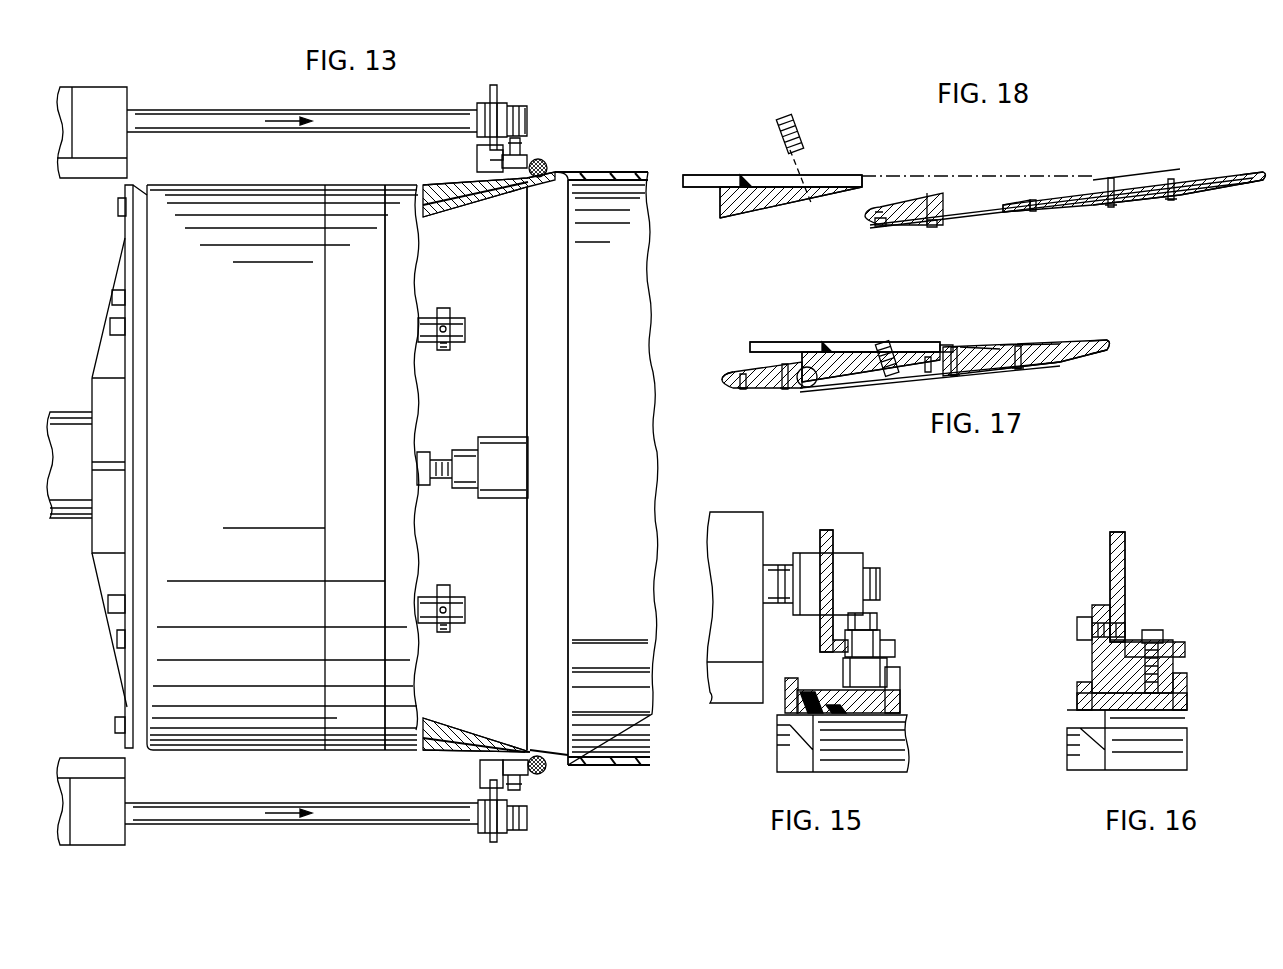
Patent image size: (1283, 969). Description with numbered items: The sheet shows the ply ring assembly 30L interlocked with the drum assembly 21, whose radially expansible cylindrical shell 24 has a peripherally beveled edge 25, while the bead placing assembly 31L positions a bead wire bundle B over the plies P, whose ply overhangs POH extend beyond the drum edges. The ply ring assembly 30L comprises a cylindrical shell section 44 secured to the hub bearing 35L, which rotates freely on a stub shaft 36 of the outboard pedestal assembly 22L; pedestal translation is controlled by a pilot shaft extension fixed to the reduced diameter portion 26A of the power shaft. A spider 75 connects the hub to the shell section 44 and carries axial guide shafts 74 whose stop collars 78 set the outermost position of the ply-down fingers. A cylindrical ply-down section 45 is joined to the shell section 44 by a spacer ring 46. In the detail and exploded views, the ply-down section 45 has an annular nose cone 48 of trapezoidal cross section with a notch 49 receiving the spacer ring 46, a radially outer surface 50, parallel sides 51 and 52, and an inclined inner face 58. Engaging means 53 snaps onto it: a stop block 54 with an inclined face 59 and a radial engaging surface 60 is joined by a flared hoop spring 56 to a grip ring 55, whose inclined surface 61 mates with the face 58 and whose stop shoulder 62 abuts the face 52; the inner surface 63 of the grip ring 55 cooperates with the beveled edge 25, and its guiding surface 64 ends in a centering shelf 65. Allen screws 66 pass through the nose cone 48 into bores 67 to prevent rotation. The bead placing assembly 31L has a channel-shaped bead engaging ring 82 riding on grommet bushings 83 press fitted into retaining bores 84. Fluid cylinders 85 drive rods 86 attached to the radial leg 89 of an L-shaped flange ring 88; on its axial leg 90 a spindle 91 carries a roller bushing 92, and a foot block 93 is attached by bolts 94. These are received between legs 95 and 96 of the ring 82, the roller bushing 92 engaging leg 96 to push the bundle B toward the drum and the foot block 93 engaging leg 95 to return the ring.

In FIG. 13, the fluid cylinders 85 is at (100, 105).
In FIG. 15, the fluid cylinders 85 is at (725, 576).
In FIG. 13, the reciprocating rods 86 is at (352, 118).
In FIG. 15, the reciprocating rods 86 is at (872, 580).
In FIG. 13, the annular flange ring 88 is at (494, 88).
In FIG. 15, the annular flange ring 88 is at (836, 548).
In FIG. 16, the annular flange ring 88 is at (1128, 556).
In FIG. 13, the bead placing assembly 31L is at (508, 112).
In FIG. 15, the bead placing assembly 31L is at (782, 525).
In FIG. 13, the roller bushing 92 is at (518, 160).
In FIG. 15, the roller bushing 92 is at (843, 668).
In FIG. 13, the foot block 93 is at (478, 158).
In FIG. 16, the foot block 93 is at (1095, 662).
In FIG. 13, the bead engaging ring 82 is at (472, 172).
In FIG. 15, the bead engaging ring 82 is at (903, 700).
In FIG. 16, the bead engaging ring 82 is at (1190, 702).
In FIG. 13, the ply-down section 45 is at (420, 184).
In FIG. 18, the ply-down section 45 is at (880, 163).
In FIG. 17, the ply-down section 45 is at (762, 341).
In FIG. 13, the cylindrical shell section 44 is at (228, 185).
In FIG. 15, the cylindrical shell section 44 is at (900, 748).
In FIG. 16, the cylindrical shell section 44 is at (1175, 756).
In FIG. 13, the ply ring assembly 30L is at (270, 184).
In FIG. 13, the spacer ring 46 is at (352, 186).
In FIG. 18, the spacer ring 46 is at (716, 176).
In FIG. 17, the spacer ring 46 is at (790, 342).
In FIG. 13, the ply overhangs POH is at (458, 208).
In FIG. 13, the bead wire bundle B is at (549, 165).
In FIG. 13, the plies P is at (603, 171).
In FIG. 13, the beveled edge 25 is at (540, 242).
In FIG. 13, the drum assembly 21 is at (522, 277).
In FIG. 13, the cylindrical shell 24 is at (645, 310).
In FIG. 13, the axial guide shafts 74 is at (462, 333).
In FIG. 13, the stop collars 78 is at (444, 350).
In FIG. 13, the reduced diameter shaft portion 26A is at (490, 440).
In FIG. 13, the spider 75 is at (105, 345).
In FIG. 13, the stub shaft 36 is at (62, 420).
In FIG. 13, the hub bearing 35L is at (112, 416).
In FIG. 13, the outboard pedestal assembly 22L is at (560, 812).
In FIG. 18, the Allen screws 66 is at (797, 124).
In FIG. 17, the Allen screws 66 is at (884, 342).
In FIG. 18, the radially outer surface 50 is at (818, 176).
In FIG. 18, the annular nose cone 48 is at (834, 182).
In FIG. 17, the annular nose cone 48 is at (846, 345).
In FIG. 18, the recess or notch 49 is at (744, 177).
In FIG. 17, the recess or notch 49 is at (816, 342).
In FIG. 18, the parallel side 51 is at (716, 210).
In FIG. 17, the parallel side 51 is at (800, 385).
In FIG. 18, the radially inward annular face 58 is at (775, 212).
In FIG. 17, the radially inward annular face 58 is at (924, 375).
In FIG. 18, the second parallel face 52 is at (863, 190).
In FIG. 17, the second parallel face 52 is at (995, 348).
In FIG. 18, the radially outwardly inclined face 59 is at (895, 210).
In FIG. 17, the radially outwardly inclined face 59 is at (745, 366).
In FIG. 18, the radial engaging surface 60 is at (940, 210).
In FIG. 17, the radial engaging surface 60 is at (814, 384).
In FIG. 18, the radially inclined surface 61 is at (1012, 204).
In FIG. 17, the radially inclined surface 61 is at (938, 345).
In FIG. 18, the stop block 54 is at (905, 225).
In FIG. 17, the stop block 54 is at (764, 384).
In FIG. 18, the flared hoop spring 56 is at (985, 230).
In FIG. 17, the flared hoop spring 56 is at (862, 385).
In FIG. 18, the bores 67 is at (1034, 213).
In FIG. 17, the bores 67 is at (925, 375).
In FIG. 18, the engaging means 53 is at (1080, 168).
In FIG. 17, the engaging means 53 is at (1112, 343).
In FIG. 18, the radial stop shoulder 62 is at (1110, 178).
In FIG. 17, the radial stop shoulder 62 is at (950, 346).
In FIG. 18, the grip ring 55 is at (1142, 180).
In FIG. 17, the grip ring 55 is at (1018, 346).
In FIG. 18, the radially outer-inclined guiding surface 64 is at (1200, 178).
In FIG. 17, the radially outer-inclined guiding surface 64 is at (1052, 345).
In FIG. 18, the annular centering shelf 65 is at (1255, 172).
In FIG. 17, the annular centering shelf 65 is at (1098, 342).
In FIG. 18, the radially inner surface 63 is at (1210, 193).
In FIG. 17, the radially inner surface 63 is at (1058, 360).
In FIG. 15, the radially oriented leg 89 is at (826, 532).
In FIG. 16, the radially oriented leg 89 is at (1122, 538).
In FIG. 15, the spindle 91 is at (878, 620).
In FIG. 15, the axially oriented leg 90 is at (890, 646).
In FIG. 16, the axially oriented leg 90 is at (1186, 650).
In FIG. 15, the leg 96 is at (895, 678).
In FIG. 16, the leg 96 is at (1186, 690).
In FIG. 15, the leg 95 is at (785, 688).
In FIG. 16, the leg 95 is at (1078, 688).
In FIG. 15, the retaining bores 84 is at (812, 692).
In FIG. 15, the grommet bushings 83 is at (795, 712).
In FIG. 16, the bolts 94 is at (1077, 626).